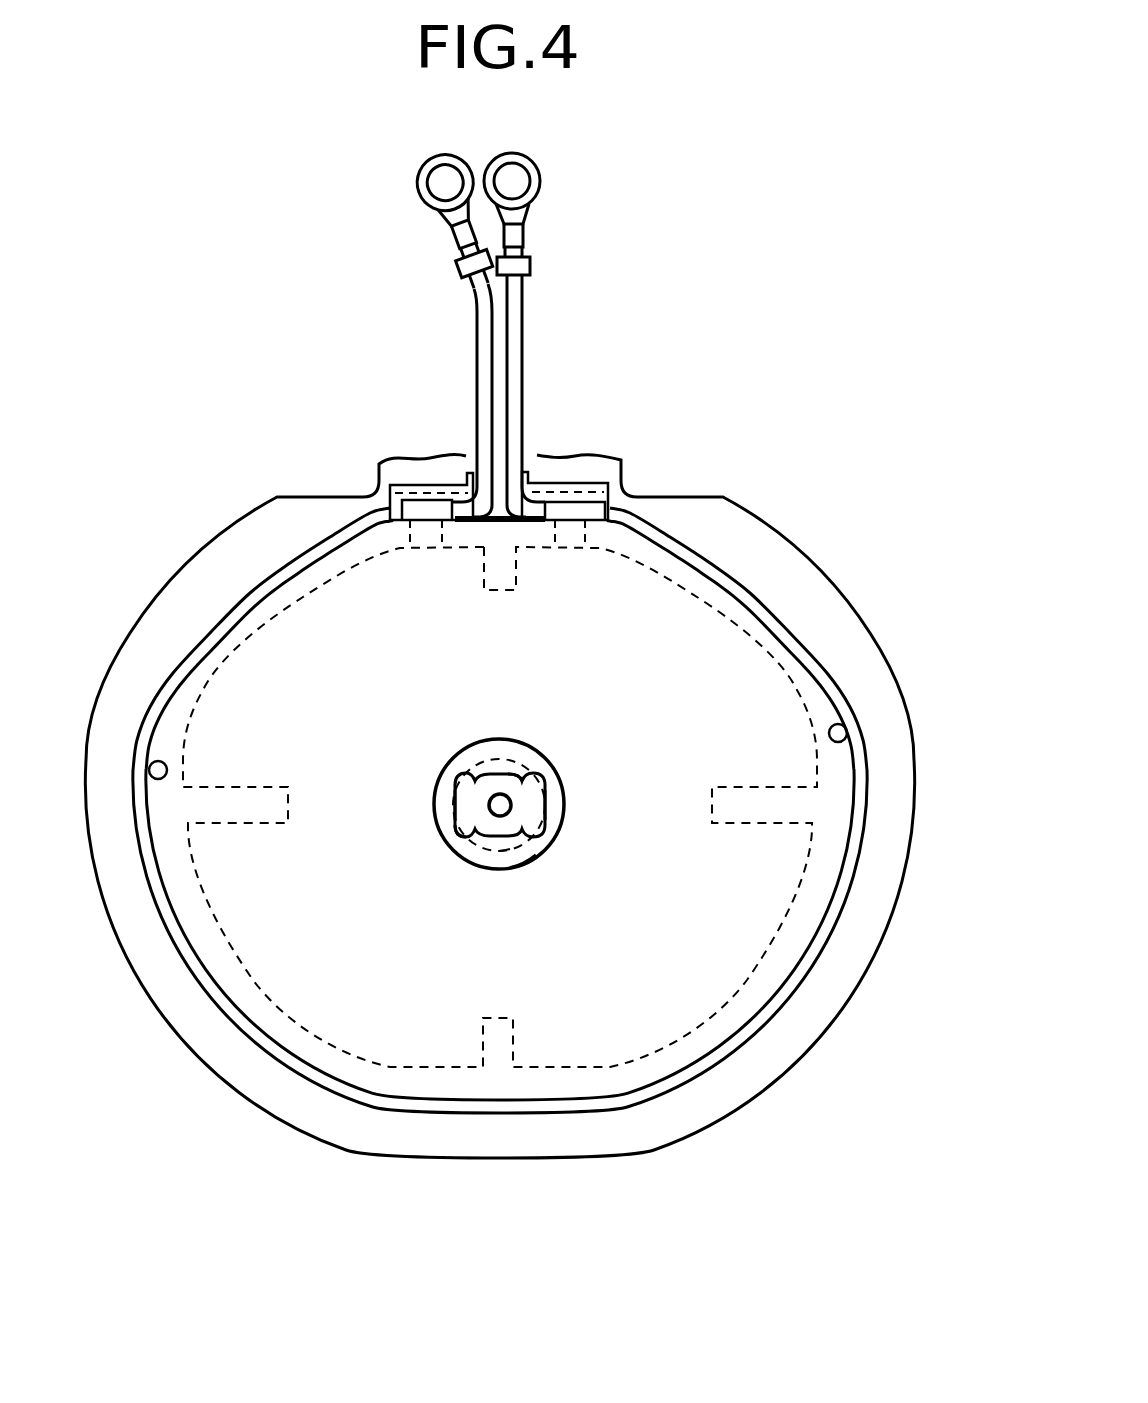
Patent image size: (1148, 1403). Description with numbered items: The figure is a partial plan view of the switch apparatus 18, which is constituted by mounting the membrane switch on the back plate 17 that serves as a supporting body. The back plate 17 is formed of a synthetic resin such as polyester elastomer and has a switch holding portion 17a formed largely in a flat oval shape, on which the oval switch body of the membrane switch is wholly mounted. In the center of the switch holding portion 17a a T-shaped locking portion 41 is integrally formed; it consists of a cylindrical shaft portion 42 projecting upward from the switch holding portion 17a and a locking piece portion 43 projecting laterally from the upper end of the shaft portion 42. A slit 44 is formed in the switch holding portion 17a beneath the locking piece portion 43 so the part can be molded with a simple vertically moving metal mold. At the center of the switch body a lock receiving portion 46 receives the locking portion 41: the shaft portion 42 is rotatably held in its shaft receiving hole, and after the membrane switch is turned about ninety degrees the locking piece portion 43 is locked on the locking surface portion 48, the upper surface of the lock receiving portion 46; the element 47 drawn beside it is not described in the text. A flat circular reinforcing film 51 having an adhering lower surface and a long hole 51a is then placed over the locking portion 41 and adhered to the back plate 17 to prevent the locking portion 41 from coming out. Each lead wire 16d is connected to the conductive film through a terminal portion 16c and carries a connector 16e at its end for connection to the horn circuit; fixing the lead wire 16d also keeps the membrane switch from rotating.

The terminal portion 16c is at (390, 495).
The lead wire 16d is at (484, 365).
The connector 16e is at (421, 203).
The back plate 17 is at (839, 592).
The switch holding portion 17a is at (853, 628).
The switch apparatus 18 is at (522, 785).
The locking portion 41 is at (536, 779).
The shaft portion 42 is at (499, 793).
The locking piece portion 43 is at (453, 805).
The slit 44 is at (480, 762).
The lock receiving portion 46 is at (549, 852).
The peripheral portion 47 is at (536, 866).
The locking surface portion 48 is at (510, 866).
The reinforcing film 51 is at (525, 760).
The long hole 51a is at (465, 835).